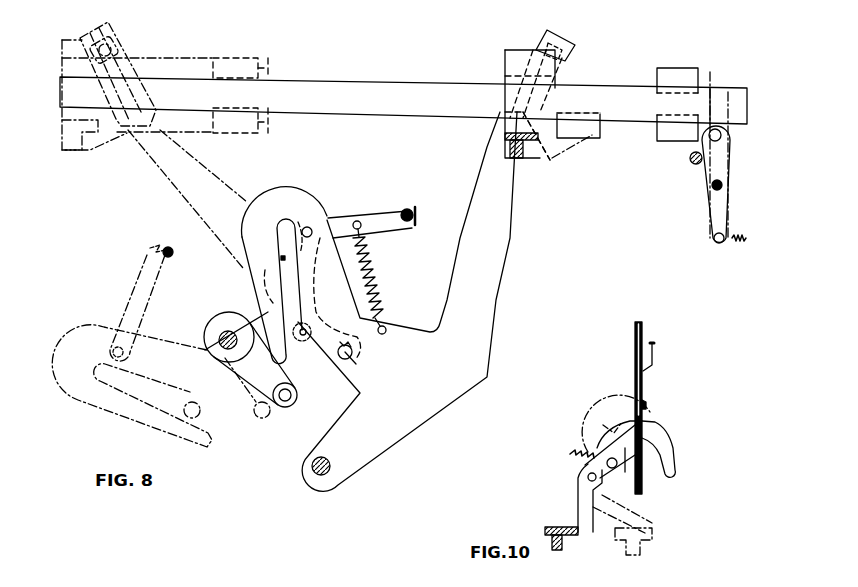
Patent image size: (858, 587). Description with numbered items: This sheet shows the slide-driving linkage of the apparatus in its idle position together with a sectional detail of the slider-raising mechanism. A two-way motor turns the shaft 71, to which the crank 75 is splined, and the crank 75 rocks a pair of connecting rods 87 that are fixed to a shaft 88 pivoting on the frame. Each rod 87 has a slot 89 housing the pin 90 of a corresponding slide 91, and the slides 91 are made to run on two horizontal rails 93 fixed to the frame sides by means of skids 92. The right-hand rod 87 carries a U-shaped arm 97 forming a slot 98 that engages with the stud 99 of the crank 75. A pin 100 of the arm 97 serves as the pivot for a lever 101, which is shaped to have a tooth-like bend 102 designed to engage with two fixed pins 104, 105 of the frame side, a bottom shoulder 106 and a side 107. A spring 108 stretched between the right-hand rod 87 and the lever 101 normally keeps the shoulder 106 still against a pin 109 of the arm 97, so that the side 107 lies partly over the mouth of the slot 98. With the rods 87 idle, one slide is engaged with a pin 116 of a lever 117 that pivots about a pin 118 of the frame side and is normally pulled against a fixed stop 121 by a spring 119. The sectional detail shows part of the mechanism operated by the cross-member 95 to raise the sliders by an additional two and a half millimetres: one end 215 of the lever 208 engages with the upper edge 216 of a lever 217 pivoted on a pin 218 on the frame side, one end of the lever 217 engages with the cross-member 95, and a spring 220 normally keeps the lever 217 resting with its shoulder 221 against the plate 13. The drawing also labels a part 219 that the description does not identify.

In FIG. 10, the plate 13 is at (643, 334).
In FIG. 8, the shaft 71 is at (212, 328).
In FIG. 8, the crank 75 is at (225, 368).
In FIG. 8, the connecting rods 87 is at (491, 300).
In FIG. 8, the shaft 88 is at (311, 467).
In FIG. 8, the slot 89 is at (548, 162).
In FIG. 8, the pin 90 is at (567, 56).
In FIG. 8, the slide 91 is at (620, 135).
In FIG. 8, the skids 92 is at (505, 70).
In FIG. 8, the horizontal rails 93 is at (731, 89).
In FIG. 8, the cross-member 95 is at (504, 150).
In FIG. 10, the cross-member 95 is at (563, 547).
In FIG. 8, the U-shaped arm 97 is at (304, 196).
In FIG. 8, the slot 98 is at (282, 259).
In FIG. 8, the stud 99 is at (287, 406).
In FIG. 8, the pin 100 is at (312, 228).
In FIG. 8, the lever 101 is at (370, 213).
In FIG. 8, the tooth-like bend 102 is at (417, 220).
In FIG. 8, the fixed pin 104 is at (406, 209).
In FIG. 8, the fixed pin 105 is at (146, 293).
In FIG. 8, the bottom shoulder 106 is at (354, 352).
In FIG. 8, the side 107 is at (303, 342).
In FIG. 8, the spring 108 is at (394, 278).
In FIG. 8, the pin 109 is at (357, 361).
In FIG. 8, the pin 116 is at (727, 106).
In FIG. 8, the lever 117 is at (712, 222).
In FIG. 8, the pin 118 is at (711, 192).
In FIG. 8, the spring 119 is at (733, 242).
In FIG. 8, the fixed stop 121 is at (694, 164).
In FIG. 10, the lever 208 is at (655, 352).
In FIG. 10, the end of lever 215 is at (646, 392).
In FIG. 10, the upper edge 216 is at (658, 425).
In FIG. 10, the lever 217 is at (643, 486).
In FIG. 10, the pin 218 is at (590, 440).
In FIG. 10, the bracket 219 is at (578, 513).
In FIG. 10, the spring 220 is at (576, 462).
In FIG. 10, the shoulder 221 is at (617, 424).